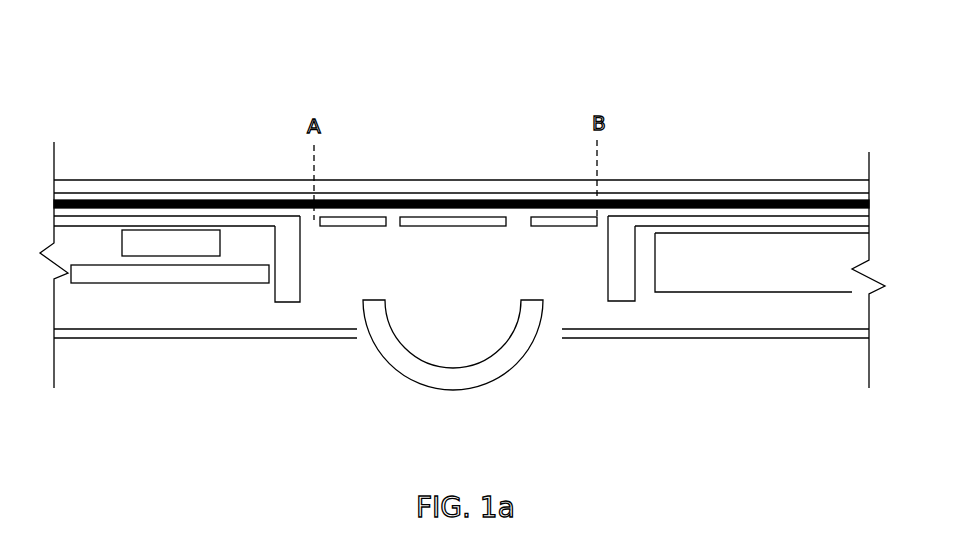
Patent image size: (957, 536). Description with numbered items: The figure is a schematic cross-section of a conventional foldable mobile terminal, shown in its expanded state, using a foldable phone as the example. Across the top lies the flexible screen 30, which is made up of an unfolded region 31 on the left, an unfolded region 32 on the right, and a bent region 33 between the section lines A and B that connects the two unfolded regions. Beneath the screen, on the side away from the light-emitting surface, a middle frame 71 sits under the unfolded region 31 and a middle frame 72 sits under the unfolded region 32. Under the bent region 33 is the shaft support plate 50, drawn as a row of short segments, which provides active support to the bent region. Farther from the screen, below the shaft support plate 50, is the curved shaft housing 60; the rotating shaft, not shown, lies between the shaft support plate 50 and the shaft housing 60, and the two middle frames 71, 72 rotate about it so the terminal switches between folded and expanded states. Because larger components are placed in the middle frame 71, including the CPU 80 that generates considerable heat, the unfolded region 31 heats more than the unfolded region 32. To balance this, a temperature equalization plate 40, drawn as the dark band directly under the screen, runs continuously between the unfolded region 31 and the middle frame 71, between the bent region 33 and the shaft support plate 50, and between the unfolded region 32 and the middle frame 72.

The flexible screen 30 is at (520, 180).
The unfolded region 31 is at (177, 183).
The bent region 33 is at (443, 187).
The unfolded region 32 is at (763, 185).
The temperature equalization plate 40 is at (667, 202).
The shaft support plate 50 is at (460, 228).
The middle frame 71 is at (298, 278).
The middle frame 72 is at (612, 268).
The CPU 80 is at (162, 247).
The shaft housing 60 is at (424, 373).